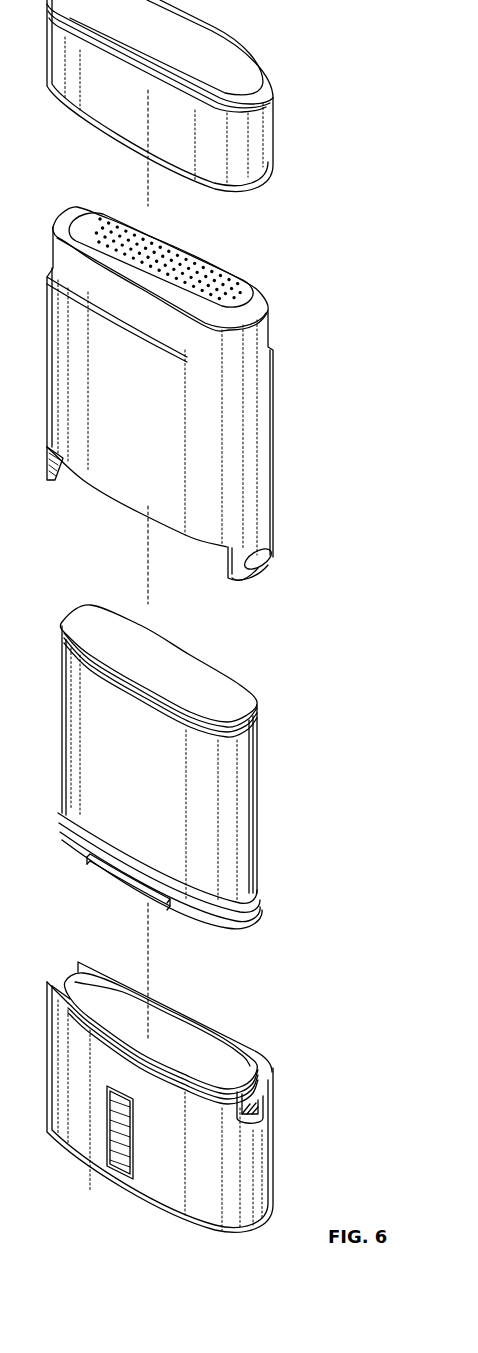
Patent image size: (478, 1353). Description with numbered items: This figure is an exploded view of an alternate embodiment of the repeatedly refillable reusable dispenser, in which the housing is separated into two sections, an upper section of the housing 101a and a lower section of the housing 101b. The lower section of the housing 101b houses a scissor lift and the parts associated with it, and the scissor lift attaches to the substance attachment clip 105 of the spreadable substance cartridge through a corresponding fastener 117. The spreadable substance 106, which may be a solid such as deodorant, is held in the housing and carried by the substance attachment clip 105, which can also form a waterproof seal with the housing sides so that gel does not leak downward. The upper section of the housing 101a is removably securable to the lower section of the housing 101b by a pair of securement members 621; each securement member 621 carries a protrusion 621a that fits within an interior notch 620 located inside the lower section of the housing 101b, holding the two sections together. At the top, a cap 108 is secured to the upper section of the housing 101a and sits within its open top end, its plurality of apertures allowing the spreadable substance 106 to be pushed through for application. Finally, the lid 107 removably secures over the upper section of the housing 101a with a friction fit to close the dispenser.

The lid 107 is at (272, 97).
The cap 108 is at (263, 297).
The upper section of the housing 101a is at (270, 403).
The securement member 621 is at (272, 557).
The protrusion 621a is at (237, 580).
The spreadable substance 106 is at (257, 730).
The substance attachment clip 105 is at (262, 905).
The fastener 117 is at (218, 1039).
The interior notch 620 is at (273, 1102).
The lower section of the housing 101b is at (273, 1135).